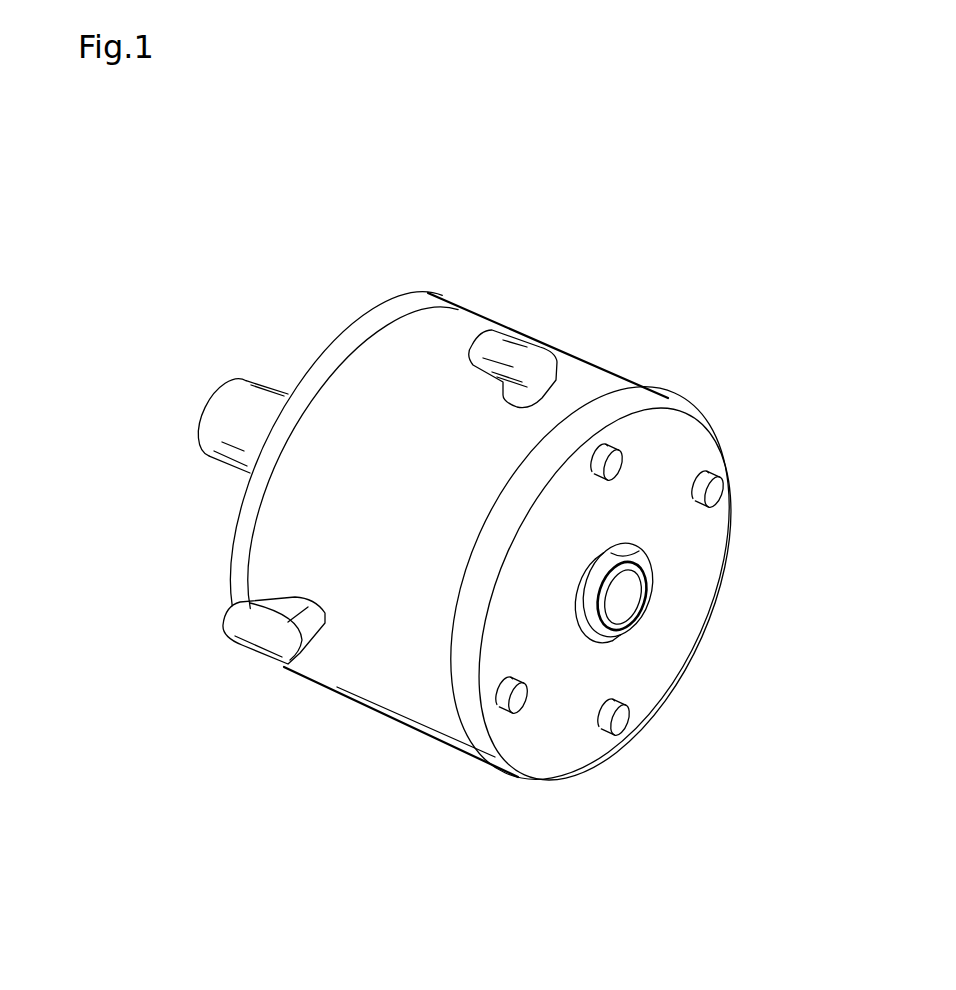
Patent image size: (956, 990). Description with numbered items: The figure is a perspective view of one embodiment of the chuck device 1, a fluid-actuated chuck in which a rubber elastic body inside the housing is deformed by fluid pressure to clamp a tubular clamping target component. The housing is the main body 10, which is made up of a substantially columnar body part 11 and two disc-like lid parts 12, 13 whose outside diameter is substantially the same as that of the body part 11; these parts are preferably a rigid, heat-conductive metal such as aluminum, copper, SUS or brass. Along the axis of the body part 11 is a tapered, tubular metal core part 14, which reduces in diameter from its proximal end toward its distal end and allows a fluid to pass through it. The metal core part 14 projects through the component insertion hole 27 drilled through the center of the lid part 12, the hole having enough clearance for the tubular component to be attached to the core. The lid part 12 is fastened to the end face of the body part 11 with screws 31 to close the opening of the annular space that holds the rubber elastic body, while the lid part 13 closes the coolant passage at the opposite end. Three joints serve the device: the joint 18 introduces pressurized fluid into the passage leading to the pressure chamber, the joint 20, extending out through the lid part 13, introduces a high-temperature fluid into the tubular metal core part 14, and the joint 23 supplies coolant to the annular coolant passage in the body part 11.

The chuck device 1 is at (453, 496).
The main body 10 is at (590, 506).
The body part 11 is at (401, 735).
The lid part 12 is at (605, 594).
The lid part 13 is at (344, 436).
The metal core part 14 is at (653, 625).
The joint 18 is at (525, 326).
The joint 20 is at (199, 440).
The joint 23 is at (231, 654).
The component insertion hole 27 is at (703, 557).
The screws 31 is at (611, 661).